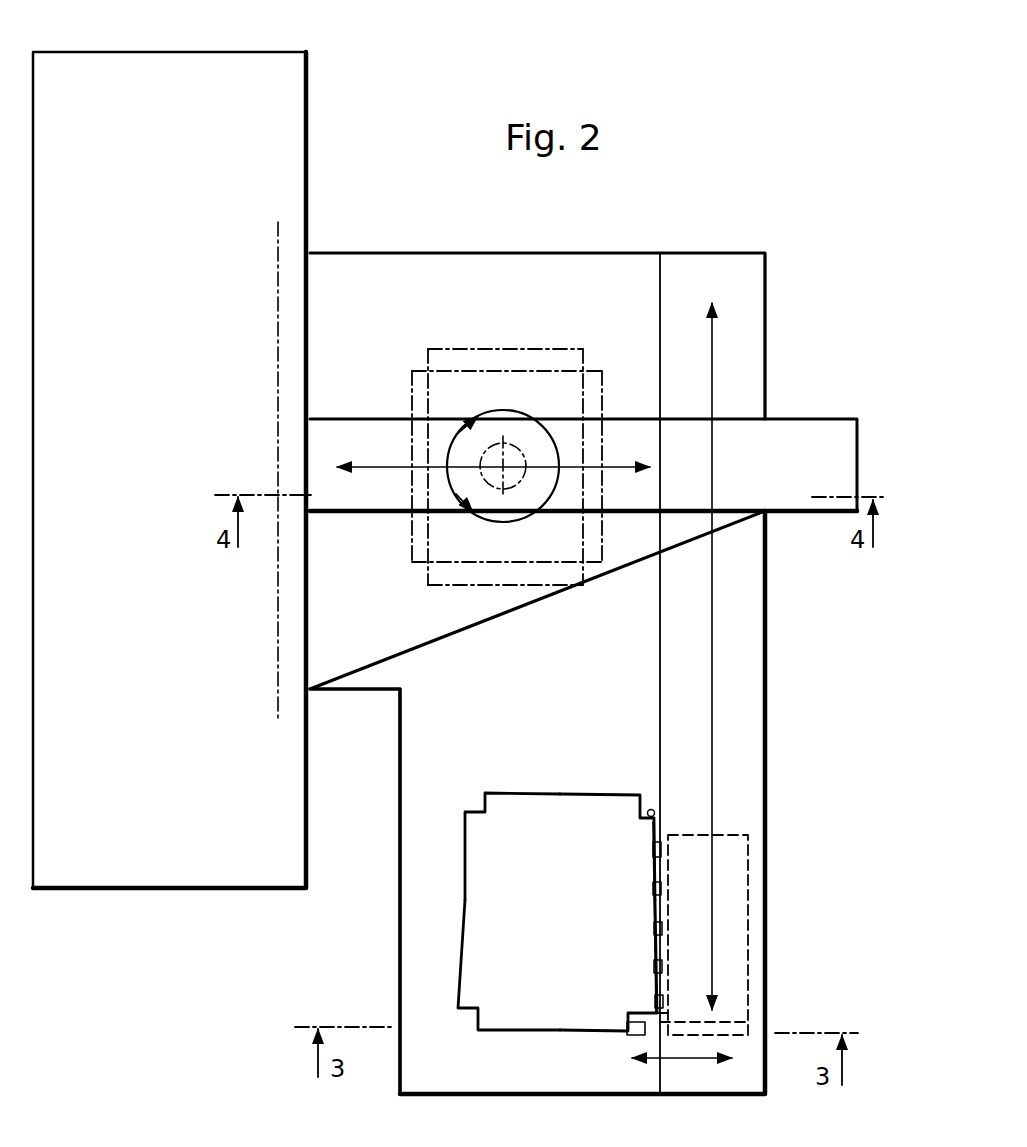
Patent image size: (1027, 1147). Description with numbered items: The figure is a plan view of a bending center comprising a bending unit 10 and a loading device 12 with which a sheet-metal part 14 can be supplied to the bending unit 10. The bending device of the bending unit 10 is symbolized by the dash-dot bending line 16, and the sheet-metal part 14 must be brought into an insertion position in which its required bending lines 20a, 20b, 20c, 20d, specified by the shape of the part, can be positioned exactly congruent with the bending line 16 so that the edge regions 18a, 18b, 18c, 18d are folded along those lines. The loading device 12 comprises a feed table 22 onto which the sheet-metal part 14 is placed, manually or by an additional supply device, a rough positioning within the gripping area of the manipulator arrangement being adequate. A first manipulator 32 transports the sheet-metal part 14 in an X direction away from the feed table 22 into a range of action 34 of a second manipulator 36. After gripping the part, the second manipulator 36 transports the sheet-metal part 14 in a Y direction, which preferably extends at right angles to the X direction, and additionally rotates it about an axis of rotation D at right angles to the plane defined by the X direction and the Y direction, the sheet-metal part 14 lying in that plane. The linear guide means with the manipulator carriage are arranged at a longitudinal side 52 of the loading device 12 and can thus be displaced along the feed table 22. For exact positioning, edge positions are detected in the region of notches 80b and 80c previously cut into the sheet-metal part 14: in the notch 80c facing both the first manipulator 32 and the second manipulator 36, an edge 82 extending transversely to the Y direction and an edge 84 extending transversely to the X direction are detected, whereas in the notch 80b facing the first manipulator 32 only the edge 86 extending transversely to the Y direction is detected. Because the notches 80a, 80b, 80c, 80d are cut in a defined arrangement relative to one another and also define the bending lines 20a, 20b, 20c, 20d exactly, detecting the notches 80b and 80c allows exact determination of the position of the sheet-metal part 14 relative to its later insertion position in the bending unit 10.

The bending unit 10 is at (290, 805).
The loading device 12 is at (433, 920).
The sheet-metal part 14 is at (501, 693).
The bending line 16 is at (280, 704).
The edge region 18a is at (427, 532).
The edge region 18b is at (565, 575).
The edge region 18c is at (590, 527).
The edge region 18d is at (448, 362).
The bending line 20a is at (412, 405).
The bending line 20b is at (472, 565).
The bending line 20c is at (592, 403).
The bending line 20d is at (510, 370).
The feed table 22 is at (422, 968).
The first manipulator 32 is at (742, 975).
The range of action 34 is at (648, 450).
The second manipulator 36 is at (473, 457).
The longitudinal side 52 is at (757, 782).
The notch 80a is at (472, 1016).
The notch 80b is at (637, 1038).
The notch 80c is at (648, 806).
The notch 80d is at (480, 807).
The edge 82 is at (640, 810).
The edge 84 is at (652, 822).
The edge 86 is at (618, 1018).
The X direction X is at (708, 680).
The Y direction Y is at (375, 478).
The axis of rotation D is at (528, 480).